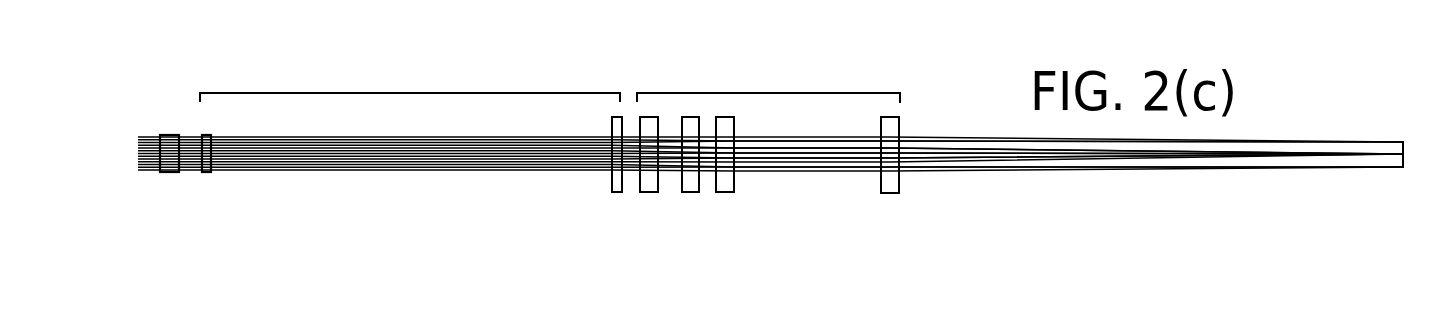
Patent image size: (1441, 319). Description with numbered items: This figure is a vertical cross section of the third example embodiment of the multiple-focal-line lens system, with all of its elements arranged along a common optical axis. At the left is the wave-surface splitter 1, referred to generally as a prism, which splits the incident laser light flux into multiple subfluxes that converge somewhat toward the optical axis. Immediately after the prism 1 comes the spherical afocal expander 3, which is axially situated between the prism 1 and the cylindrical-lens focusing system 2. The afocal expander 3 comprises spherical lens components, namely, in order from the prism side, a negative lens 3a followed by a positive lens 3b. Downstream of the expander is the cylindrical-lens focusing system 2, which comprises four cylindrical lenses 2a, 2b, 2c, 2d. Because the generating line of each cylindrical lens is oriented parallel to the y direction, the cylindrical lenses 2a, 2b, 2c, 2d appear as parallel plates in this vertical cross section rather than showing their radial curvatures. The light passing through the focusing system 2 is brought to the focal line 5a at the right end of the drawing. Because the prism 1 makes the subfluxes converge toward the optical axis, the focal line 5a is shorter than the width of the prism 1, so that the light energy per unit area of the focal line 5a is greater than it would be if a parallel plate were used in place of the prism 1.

The wave-surface splitter 1 is at (173, 135).
The spherical afocal expander 3 is at (410, 79).
The negative lens 3a is at (206, 172).
The positive lens 3b is at (617, 192).
The cylindrical-lens focusing system 2 is at (768, 81).
The cylindrical lens 2a is at (647, 192).
The cylindrical lens 2b is at (688, 192).
The cylindrical lens 2c is at (725, 192).
The cylindrical lens 2d is at (888, 193).
The focal line 5a is at (1405, 147).